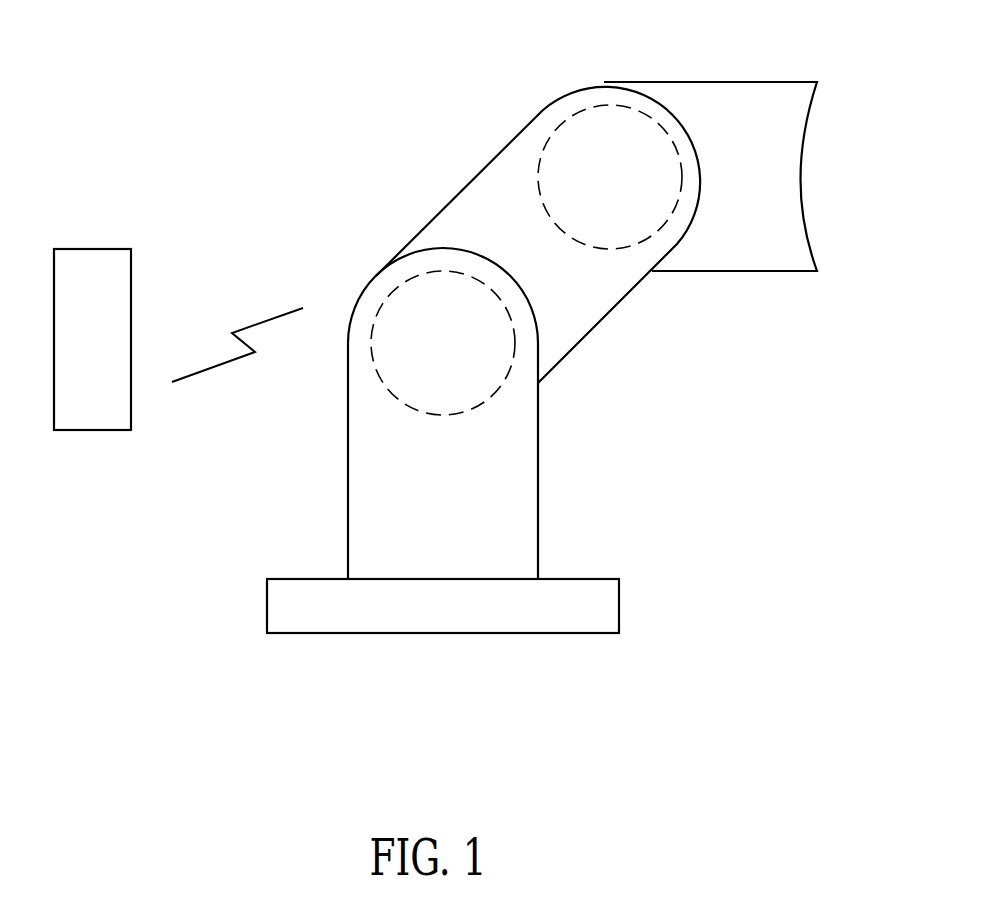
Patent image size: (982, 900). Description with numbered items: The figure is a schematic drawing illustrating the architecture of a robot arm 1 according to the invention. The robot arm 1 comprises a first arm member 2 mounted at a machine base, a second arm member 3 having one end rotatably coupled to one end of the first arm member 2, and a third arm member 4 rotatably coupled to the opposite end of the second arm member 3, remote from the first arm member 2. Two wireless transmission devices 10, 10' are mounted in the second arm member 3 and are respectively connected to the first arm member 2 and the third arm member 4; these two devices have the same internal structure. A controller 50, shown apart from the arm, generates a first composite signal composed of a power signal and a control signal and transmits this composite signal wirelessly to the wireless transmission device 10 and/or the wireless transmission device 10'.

The robot arm 1 is at (364, 152).
The first arm member 2 is at (382, 484).
The second arm member 3 is at (485, 205).
The third arm member 4 is at (738, 107).
The wireless transmission device 10 is at (410, 316).
The wireless transmission device 10' is at (610, 131).
The controller 50 is at (98, 273).